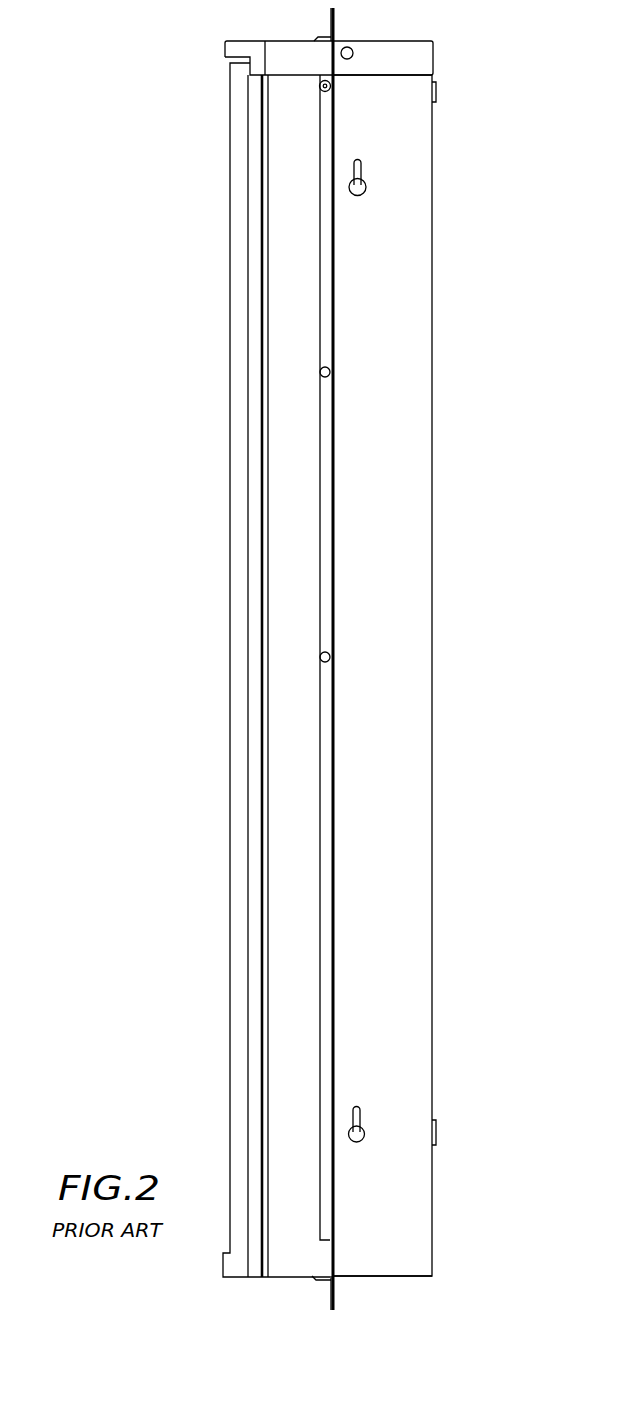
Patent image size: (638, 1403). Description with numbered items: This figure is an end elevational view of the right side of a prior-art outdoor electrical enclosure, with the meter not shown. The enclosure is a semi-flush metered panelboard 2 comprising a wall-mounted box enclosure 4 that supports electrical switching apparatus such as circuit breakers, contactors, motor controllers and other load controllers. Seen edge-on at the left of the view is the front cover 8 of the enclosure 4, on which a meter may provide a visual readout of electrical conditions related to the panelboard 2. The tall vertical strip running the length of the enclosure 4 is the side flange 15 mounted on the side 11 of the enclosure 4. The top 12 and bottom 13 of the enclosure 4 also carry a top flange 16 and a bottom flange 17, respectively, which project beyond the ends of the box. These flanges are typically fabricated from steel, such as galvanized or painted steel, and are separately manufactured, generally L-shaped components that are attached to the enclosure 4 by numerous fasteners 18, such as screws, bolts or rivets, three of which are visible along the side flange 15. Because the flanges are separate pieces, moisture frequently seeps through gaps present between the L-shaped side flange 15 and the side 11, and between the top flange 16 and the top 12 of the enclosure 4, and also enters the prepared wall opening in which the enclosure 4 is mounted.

The semi-flush metered panelboard 2 is at (474, 1228).
The wall-mounted box enclosure 4 is at (450, 366).
The front cover 8 is at (230, 495).
The side 11 is at (334, 257).
The top 12 is at (386, 40).
The bottom 13 is at (388, 1278).
The side flange 15 is at (335, 511).
The top flange 16 is at (329, 20).
The bottom flange 17 is at (326, 1289).
The fasteners 18 is at (320, 93).